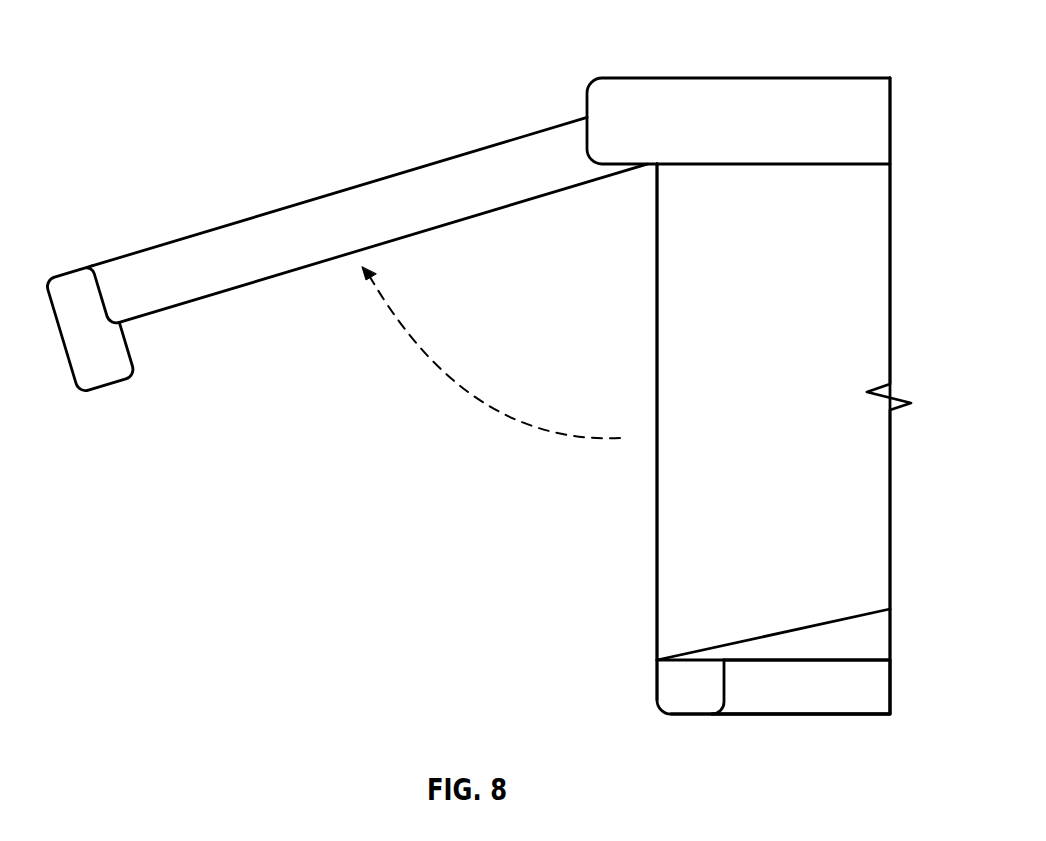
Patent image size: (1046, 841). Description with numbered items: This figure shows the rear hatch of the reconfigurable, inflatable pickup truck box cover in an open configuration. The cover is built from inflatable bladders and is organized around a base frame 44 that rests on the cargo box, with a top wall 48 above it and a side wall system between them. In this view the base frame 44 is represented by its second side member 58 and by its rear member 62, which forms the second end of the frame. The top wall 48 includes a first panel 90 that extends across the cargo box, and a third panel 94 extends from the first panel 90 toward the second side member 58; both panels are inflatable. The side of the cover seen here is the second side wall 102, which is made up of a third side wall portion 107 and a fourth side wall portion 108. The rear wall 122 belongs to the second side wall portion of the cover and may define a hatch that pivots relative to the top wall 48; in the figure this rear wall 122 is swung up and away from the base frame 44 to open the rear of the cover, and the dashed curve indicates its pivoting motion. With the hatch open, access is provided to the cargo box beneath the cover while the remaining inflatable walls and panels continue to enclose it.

The base frame 44 is at (805, 715).
The top wall 48 is at (655, 78).
The second side member 58 is at (850, 700).
The rear member 62 is at (77, 280).
The first panel 90 is at (775, 78).
The third panel 94 is at (770, 148).
The second side wall 102 is at (645, 632).
The third side wall portion 107 is at (860, 250).
The fourth side wall portion 108 is at (858, 642).
The rear wall 122 is at (343, 188).